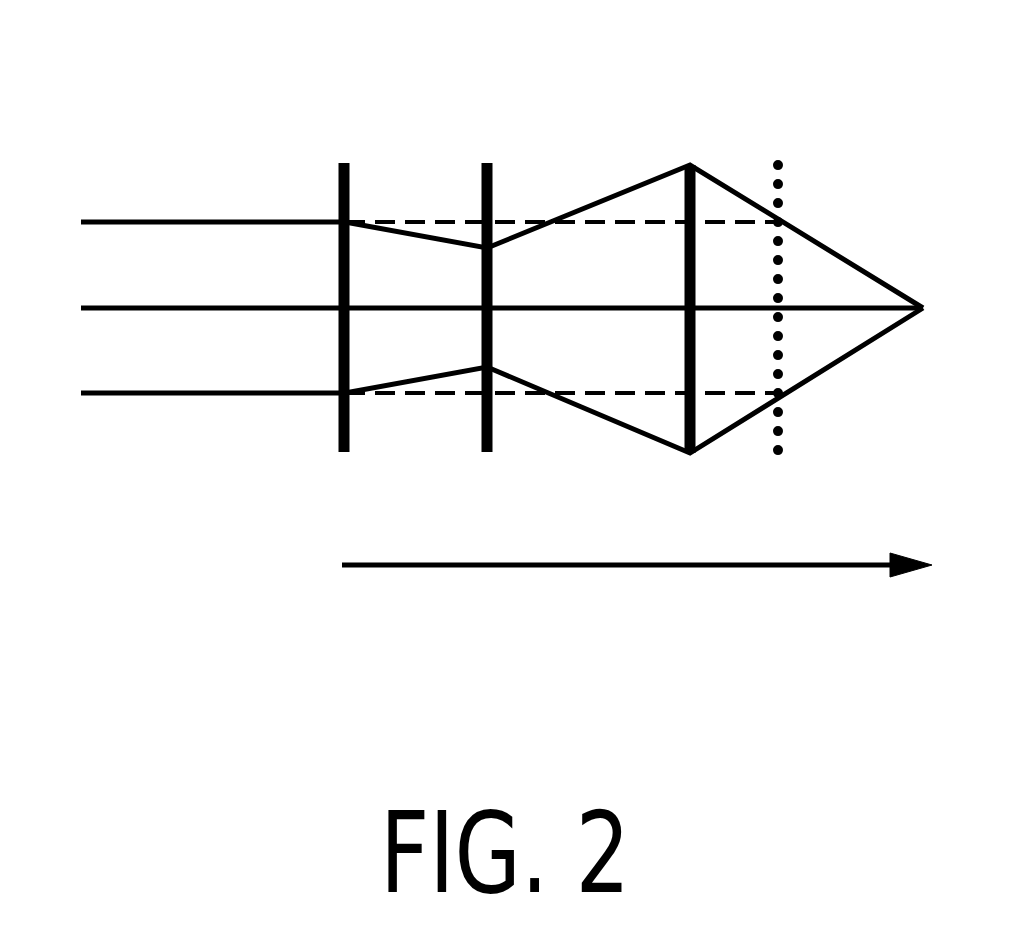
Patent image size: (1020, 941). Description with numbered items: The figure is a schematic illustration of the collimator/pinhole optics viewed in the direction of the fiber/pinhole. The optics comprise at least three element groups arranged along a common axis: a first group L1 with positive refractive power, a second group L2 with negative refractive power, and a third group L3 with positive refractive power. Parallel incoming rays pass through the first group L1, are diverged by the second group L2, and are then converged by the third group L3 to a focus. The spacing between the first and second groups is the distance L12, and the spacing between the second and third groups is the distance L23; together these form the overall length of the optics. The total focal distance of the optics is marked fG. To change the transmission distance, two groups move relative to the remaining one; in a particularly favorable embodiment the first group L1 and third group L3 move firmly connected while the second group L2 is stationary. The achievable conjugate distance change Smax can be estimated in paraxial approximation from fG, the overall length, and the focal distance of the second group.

The first group L1 is at (323, 52).
The second group L2 is at (463, 52).
The third group L3 is at (670, 52).
The distance between first and second groups L12 is at (367, 462).
The distance between second and third groups L23 is at (511, 460).
The total focal distance of the optics fG is at (777, 268).
The achievable conjugate distance change Smax is at (533, 579).